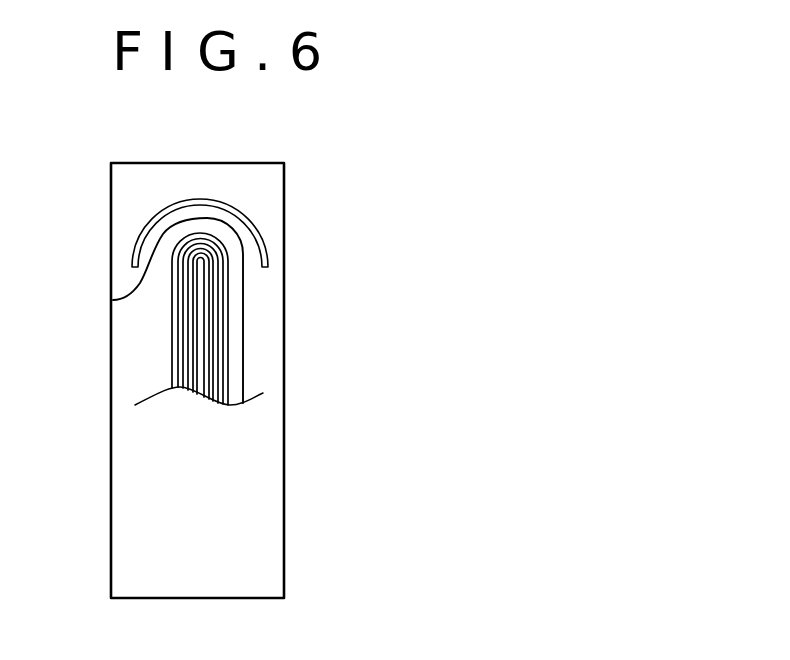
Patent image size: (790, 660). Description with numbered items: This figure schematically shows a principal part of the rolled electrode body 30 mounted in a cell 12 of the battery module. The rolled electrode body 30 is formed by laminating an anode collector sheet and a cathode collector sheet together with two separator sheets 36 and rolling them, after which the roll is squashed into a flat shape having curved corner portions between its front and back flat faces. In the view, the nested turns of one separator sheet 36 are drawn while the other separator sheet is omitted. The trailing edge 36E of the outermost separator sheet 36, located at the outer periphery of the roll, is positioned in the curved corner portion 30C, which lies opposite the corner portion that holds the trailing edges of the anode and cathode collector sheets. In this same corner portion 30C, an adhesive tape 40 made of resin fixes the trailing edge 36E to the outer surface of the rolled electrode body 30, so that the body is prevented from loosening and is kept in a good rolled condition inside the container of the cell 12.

The cell 12 is at (284, 498).
The rolled electrode body 30 is at (201, 299).
The corner portion 30C is at (208, 230).
The separator sheet 36 is at (243, 337).
The trailing edge 36E is at (113, 300).
The adhesive tape 40 is at (160, 210).